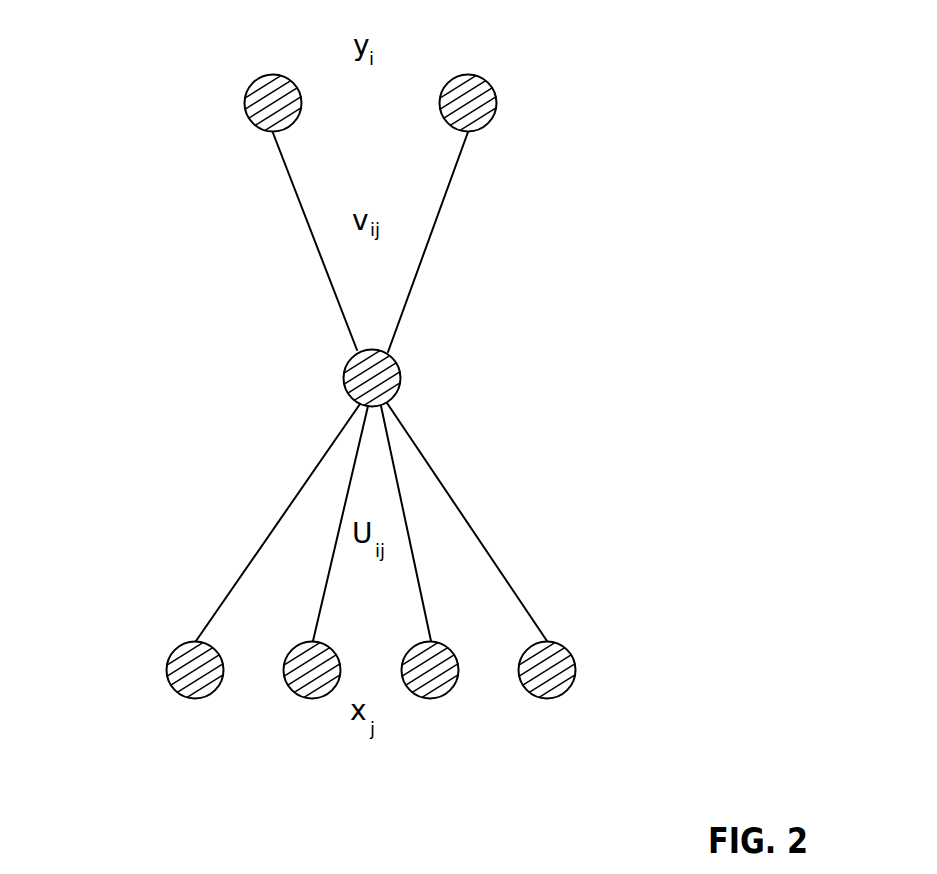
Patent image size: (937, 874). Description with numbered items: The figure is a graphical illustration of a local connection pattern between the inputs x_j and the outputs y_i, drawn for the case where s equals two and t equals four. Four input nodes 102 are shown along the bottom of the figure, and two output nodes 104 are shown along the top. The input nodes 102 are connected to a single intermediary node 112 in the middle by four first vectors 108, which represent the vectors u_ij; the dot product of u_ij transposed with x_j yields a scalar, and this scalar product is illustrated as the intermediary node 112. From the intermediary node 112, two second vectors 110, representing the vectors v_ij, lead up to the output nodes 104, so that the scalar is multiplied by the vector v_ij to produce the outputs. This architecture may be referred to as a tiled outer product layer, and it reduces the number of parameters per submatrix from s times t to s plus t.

The input nodes 102 is at (657, 743).
The output nodes 104 is at (577, 42).
The first vectors 108 is at (553, 508).
The second vectors 110 is at (495, 215).
The intermediary node 112 is at (342, 378).